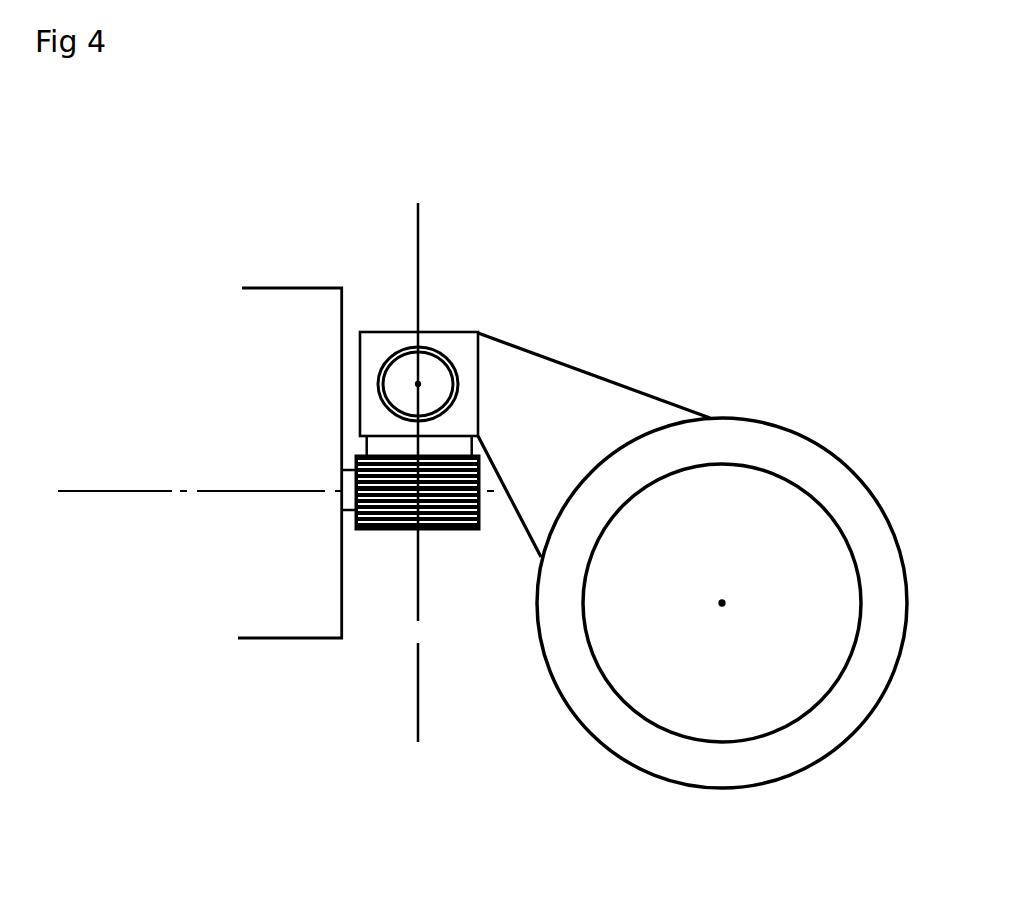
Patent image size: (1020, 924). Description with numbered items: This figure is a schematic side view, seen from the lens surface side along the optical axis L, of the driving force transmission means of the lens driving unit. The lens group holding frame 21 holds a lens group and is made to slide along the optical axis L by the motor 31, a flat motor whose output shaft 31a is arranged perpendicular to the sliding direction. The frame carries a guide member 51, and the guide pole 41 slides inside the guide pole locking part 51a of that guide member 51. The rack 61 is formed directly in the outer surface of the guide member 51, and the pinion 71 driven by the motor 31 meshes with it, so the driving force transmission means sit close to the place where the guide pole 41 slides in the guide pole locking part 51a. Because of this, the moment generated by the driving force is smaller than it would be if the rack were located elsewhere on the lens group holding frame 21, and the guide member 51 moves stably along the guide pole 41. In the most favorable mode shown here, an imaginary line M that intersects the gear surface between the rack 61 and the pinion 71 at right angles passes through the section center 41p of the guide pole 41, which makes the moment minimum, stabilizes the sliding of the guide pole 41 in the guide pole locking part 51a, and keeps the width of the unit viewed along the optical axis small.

The lens group holding frame 21 is at (808, 457).
The motor 31 is at (302, 332).
The output shaft 31a is at (341, 498).
The guide pole 41 is at (450, 404).
The section center 41p is at (434, 380).
The guide member 51 is at (468, 345).
The guide pole locking part 51a is at (397, 345).
The rack 61 is at (367, 447).
The pinion 71 is at (357, 462).
The imaginary line M is at (414, 491).
The optical axis L is at (729, 613).